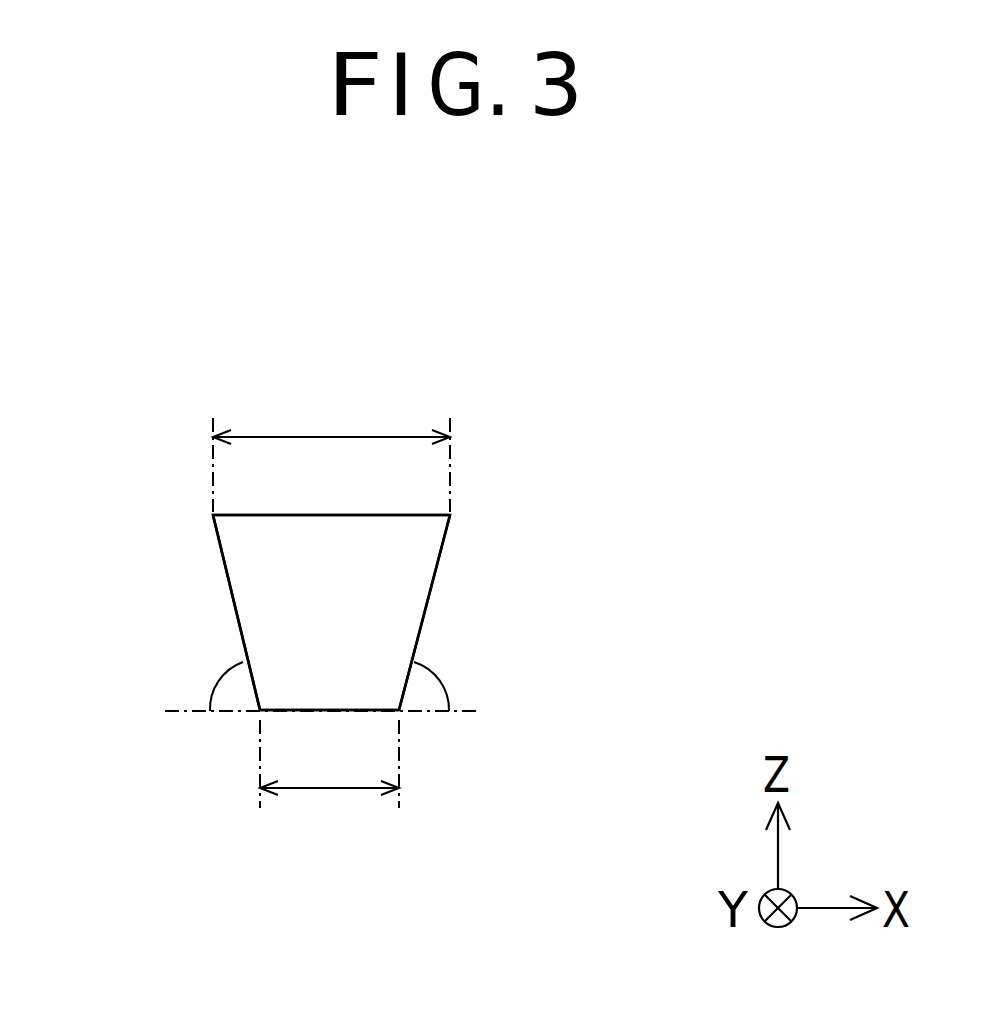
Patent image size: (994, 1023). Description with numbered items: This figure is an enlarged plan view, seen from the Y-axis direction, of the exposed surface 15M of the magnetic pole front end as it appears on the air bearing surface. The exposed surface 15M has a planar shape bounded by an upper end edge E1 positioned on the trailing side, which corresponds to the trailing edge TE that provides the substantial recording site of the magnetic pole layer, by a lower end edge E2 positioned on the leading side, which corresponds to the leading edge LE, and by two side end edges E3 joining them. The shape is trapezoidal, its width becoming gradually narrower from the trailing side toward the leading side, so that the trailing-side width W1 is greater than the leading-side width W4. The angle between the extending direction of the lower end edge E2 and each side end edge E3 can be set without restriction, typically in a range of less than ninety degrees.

The exposed surface 15M is at (268, 550).
The upper end edge E1 is at (433, 435).
The trailing edge TE is at (405, 513).
The lower end edge E2 is at (436, 790).
The leading edge LE is at (350, 713).
The side end edges E3 is at (228, 597).
The width on the trailing side W1 is at (337, 437).
The width on the leading side W4 is at (333, 789).